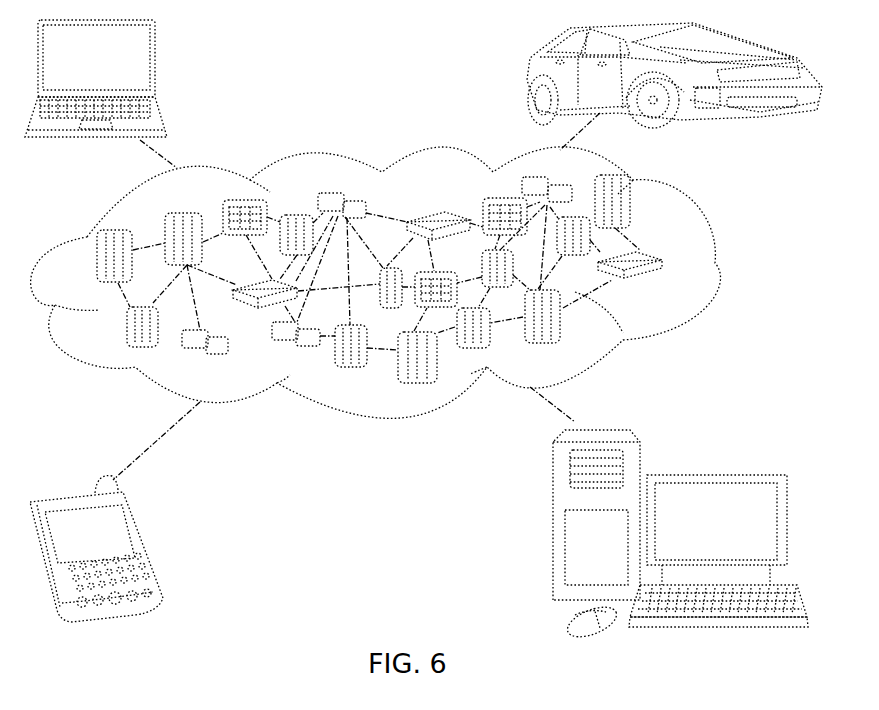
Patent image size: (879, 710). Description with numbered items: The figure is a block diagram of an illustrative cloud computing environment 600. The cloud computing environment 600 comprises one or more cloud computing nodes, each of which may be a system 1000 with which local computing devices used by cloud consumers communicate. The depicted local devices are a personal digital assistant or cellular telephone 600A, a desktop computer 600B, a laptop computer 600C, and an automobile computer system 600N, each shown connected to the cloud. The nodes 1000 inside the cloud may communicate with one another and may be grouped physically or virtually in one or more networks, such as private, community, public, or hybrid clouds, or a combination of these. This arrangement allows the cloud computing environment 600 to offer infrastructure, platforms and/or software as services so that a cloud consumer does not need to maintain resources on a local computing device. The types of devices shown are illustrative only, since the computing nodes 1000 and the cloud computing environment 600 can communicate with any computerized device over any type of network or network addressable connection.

The cloud computing environment 600 is at (715, 263).
The system 1000 is at (674, 290).
The laptop computer 600C is at (158, 64).
The automobile computer system 600N is at (525, 82).
The personal digital assistant (PDA) or cellular telephone 600A is at (147, 542).
The desktop computer 600B is at (713, 472).